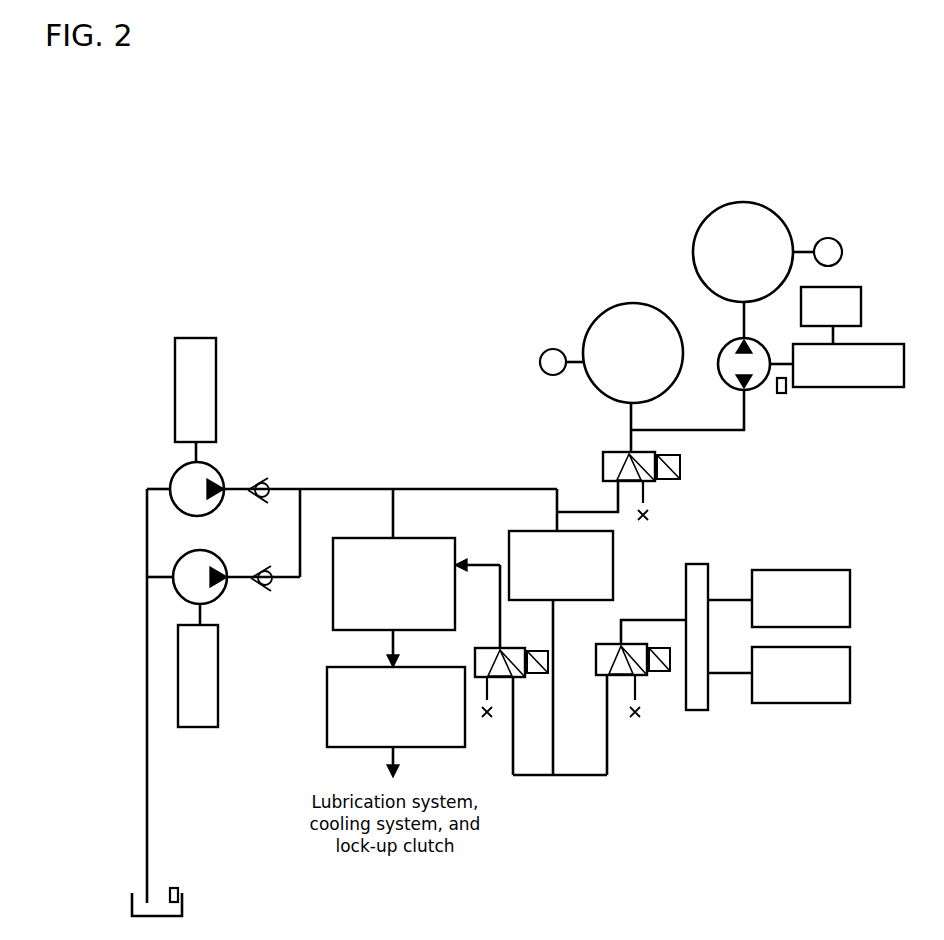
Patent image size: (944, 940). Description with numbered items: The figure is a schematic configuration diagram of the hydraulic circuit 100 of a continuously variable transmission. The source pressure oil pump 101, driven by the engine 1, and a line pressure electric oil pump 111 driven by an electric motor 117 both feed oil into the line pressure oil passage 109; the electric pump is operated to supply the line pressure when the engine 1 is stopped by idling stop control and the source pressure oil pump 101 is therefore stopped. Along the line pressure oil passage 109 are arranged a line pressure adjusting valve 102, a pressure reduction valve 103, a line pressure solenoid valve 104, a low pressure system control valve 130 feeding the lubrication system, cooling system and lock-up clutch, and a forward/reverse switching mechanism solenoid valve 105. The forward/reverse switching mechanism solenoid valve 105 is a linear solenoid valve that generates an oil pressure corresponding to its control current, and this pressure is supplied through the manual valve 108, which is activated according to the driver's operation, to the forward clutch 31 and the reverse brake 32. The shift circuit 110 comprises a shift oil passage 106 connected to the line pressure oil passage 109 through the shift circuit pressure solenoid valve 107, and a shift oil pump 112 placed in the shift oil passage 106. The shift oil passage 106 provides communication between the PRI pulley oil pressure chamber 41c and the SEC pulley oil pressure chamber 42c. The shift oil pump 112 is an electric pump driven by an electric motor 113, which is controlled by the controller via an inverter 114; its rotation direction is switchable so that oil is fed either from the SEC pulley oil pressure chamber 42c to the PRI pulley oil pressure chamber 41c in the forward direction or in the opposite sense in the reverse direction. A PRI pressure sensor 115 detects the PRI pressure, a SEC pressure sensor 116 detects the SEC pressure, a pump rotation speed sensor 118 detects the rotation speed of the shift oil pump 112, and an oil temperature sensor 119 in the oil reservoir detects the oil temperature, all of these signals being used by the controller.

The engine 1 is at (217, 386).
The forward clutch 31 is at (832, 570).
The reverse brake 32 is at (832, 703).
The PRI pulley oil pressure chamber 41c is at (700, 224).
The SEC pulley oil pressure chamber 42c is at (597, 325).
The hydraulic circuit 100 is at (95, 720).
The source pressure oil pump 101 is at (178, 468).
The line pressure adjusting valve 102 is at (455, 540).
The pressure reduction valve 103 is at (613, 550).
The line pressure solenoid valve 104 is at (524, 640).
The forward/reverse switching mechanism solenoid valve 105 is at (607, 650).
The shift oil passage 106 is at (715, 432).
The shift circuit pressure solenoid valve 107 is at (612, 452).
The manual valve 108 is at (695, 711).
The line pressure oil passage 109 is at (471, 488).
The shift circuit 110 is at (578, 226).
The line pressure electric oil pump 111 is at (222, 597).
The shift oil pump 112 is at (721, 344).
The electric motor 113 is at (838, 389).
The inverter 114 is at (862, 299).
The PRI pressure sensor 115 is at (838, 239).
The SEC pressure sensor 116 is at (545, 351).
The electric motor 117 is at (219, 690).
The pump rotation speed sensor 118 is at (783, 396).
The oil temperature sensor 119 is at (175, 887).
The low pressure system control valve 130 is at (327, 696).